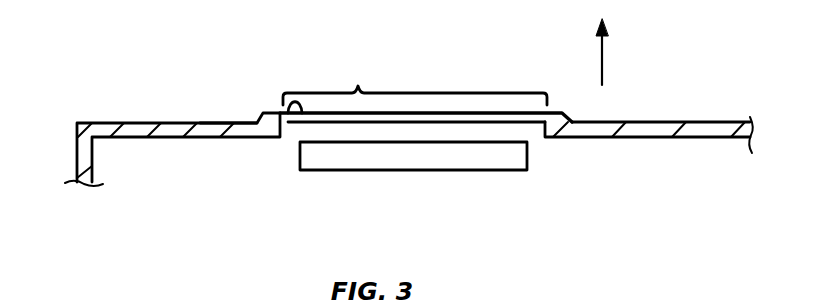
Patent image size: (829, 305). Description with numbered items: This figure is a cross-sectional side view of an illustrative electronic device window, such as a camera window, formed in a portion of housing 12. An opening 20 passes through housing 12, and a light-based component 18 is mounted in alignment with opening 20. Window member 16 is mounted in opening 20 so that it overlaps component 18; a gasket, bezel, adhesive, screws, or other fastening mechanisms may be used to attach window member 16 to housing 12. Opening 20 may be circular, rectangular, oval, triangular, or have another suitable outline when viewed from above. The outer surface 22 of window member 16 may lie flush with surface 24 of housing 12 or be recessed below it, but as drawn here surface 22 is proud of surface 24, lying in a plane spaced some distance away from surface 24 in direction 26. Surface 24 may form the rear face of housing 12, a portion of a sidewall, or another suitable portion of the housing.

The housing 12 is at (137, 128).
The surface of housing 24 is at (213, 122).
The window member 16 is at (522, 120).
The surface of window member 22 is at (288, 114).
The light-based component 18 is at (413, 162).
The opening 20 is at (415, 83).
The direction 26 is at (603, 62).